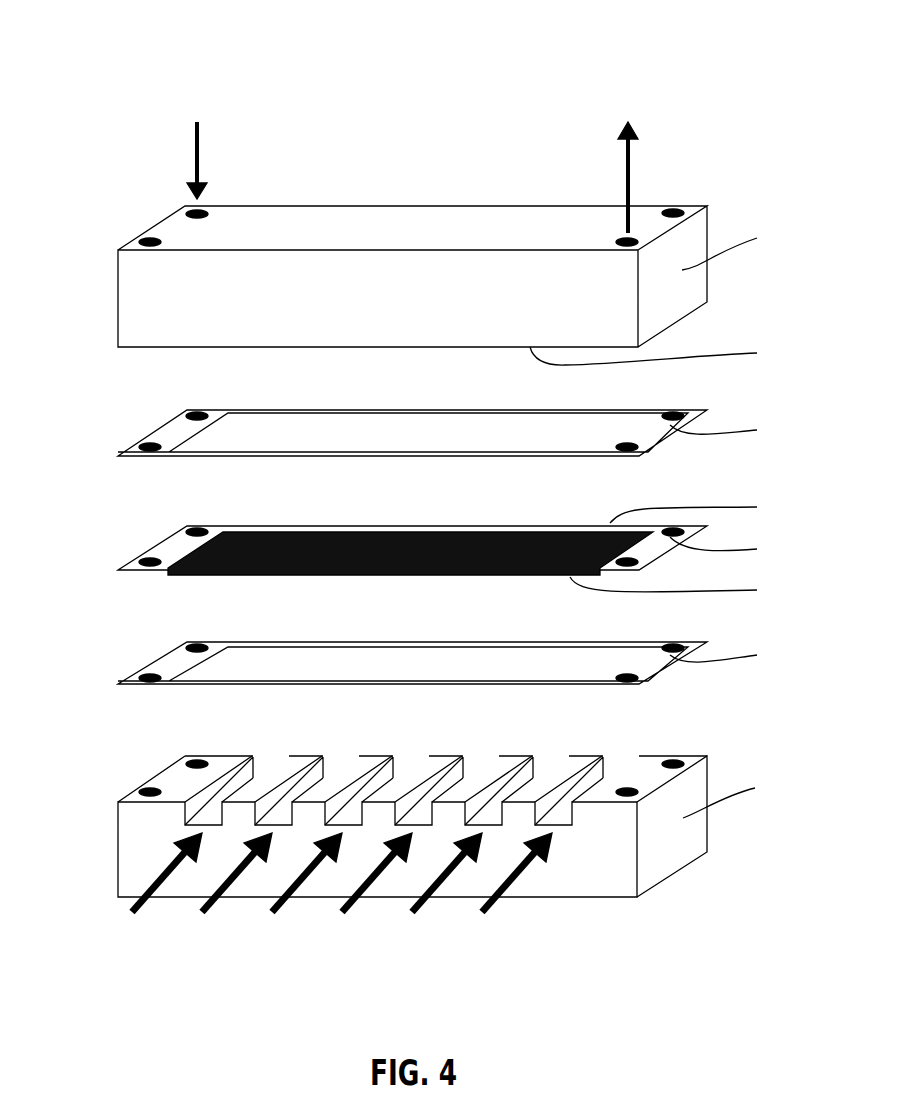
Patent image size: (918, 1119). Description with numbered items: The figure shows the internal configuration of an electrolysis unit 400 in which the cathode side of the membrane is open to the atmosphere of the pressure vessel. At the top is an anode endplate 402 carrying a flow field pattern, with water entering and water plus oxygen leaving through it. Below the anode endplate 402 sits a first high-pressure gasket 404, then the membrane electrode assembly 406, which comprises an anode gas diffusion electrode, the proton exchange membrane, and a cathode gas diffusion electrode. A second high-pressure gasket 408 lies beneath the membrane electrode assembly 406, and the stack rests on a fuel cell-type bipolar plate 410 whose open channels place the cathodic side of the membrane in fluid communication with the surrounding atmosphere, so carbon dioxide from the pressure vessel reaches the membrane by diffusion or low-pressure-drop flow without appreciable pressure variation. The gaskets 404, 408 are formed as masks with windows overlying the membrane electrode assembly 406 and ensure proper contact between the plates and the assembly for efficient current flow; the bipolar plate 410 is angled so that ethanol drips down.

The electrolysis unit 400 is at (442, 35).
The anode endplate 402 is at (118, 297).
The high-pressure gasket 404 is at (160, 424).
The membrane electrode assembly 406 is at (160, 540).
The high-pressure gasket 408 is at (160, 655).
The bipolar plate 410 is at (117, 849).